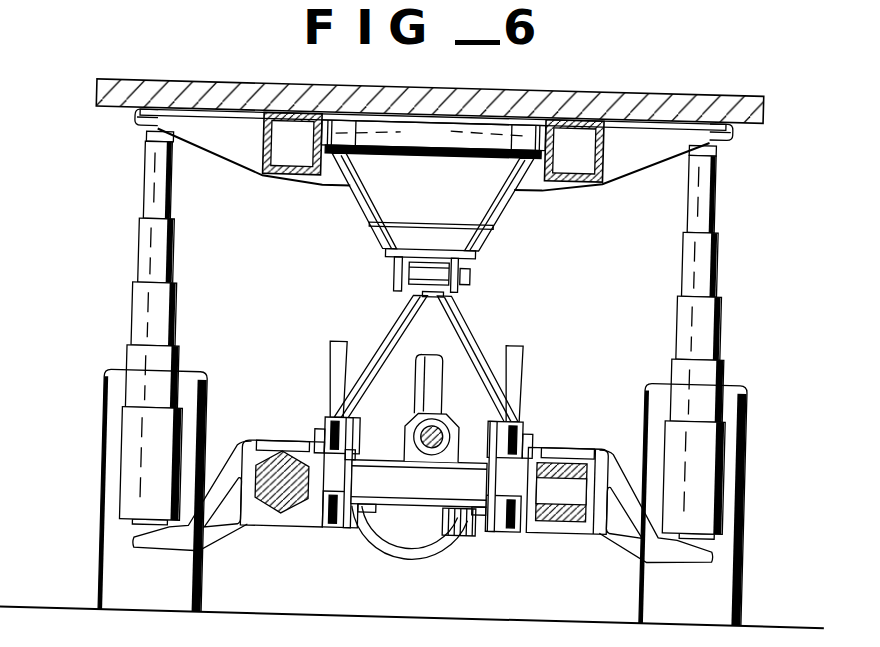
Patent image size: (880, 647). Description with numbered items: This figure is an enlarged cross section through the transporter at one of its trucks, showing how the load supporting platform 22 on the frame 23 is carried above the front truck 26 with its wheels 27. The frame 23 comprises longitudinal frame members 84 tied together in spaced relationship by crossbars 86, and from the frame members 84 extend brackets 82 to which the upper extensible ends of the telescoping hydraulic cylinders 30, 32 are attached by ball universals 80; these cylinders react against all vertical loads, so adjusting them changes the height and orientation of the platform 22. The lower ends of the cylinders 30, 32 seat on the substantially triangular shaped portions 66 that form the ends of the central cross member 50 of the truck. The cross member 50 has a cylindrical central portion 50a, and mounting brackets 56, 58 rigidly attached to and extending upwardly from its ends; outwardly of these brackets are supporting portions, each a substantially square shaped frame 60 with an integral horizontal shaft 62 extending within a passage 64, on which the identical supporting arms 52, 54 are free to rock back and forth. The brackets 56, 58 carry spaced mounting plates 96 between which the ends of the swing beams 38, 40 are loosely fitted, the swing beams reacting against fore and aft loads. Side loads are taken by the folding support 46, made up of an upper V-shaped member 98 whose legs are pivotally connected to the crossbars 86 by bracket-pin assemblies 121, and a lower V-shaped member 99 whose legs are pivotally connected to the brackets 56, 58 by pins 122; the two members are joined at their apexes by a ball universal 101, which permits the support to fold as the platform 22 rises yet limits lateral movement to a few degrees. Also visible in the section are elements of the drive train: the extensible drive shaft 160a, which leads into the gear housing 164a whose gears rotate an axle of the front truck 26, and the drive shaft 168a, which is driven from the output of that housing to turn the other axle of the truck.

The load supporting platform 22 is at (626, 95).
The frame 23 is at (251, 165).
The front truck 26 is at (253, 547).
The wheels 27 is at (114, 583).
The telescoping hydraulic cylinder 30 is at (711, 251).
The telescoping hydraulic cylinder 32 is at (133, 277).
The swing beam 38 is at (515, 348).
The swing beam 40 is at (340, 347).
The folding support 46 is at (489, 237).
The central cross member 50 is at (453, 523).
The cylindrical central portion 50a is at (360, 527).
The supporting arm 52 is at (556, 466).
The supporting arm 54 is at (292, 508).
The mounting bracket 56 is at (486, 533).
The mounting bracket 58 is at (345, 458).
The square shaped frame 60 is at (262, 523).
The horizontal shaft 62 is at (580, 482).
The passage 64 is at (272, 445).
The triangular shaped portion 66 is at (177, 546).
The ball universal 80 is at (143, 141).
The bracket 82 is at (130, 130).
The longitudinal frame member 84 is at (282, 180).
The crossbar 86 is at (452, 159).
The mounting plate 96 is at (324, 425).
The upper V-shaped member 98 is at (354, 225).
The lower V-shaped member 99 is at (394, 311).
The ball universal 101 is at (390, 271).
The bracket-pin assembly 121 is at (433, 134).
The pin 122 is at (357, 425).
The drive shaft 160a is at (430, 355).
The gear housing 164a is at (380, 532).
The drive shaft 168a is at (395, 463).